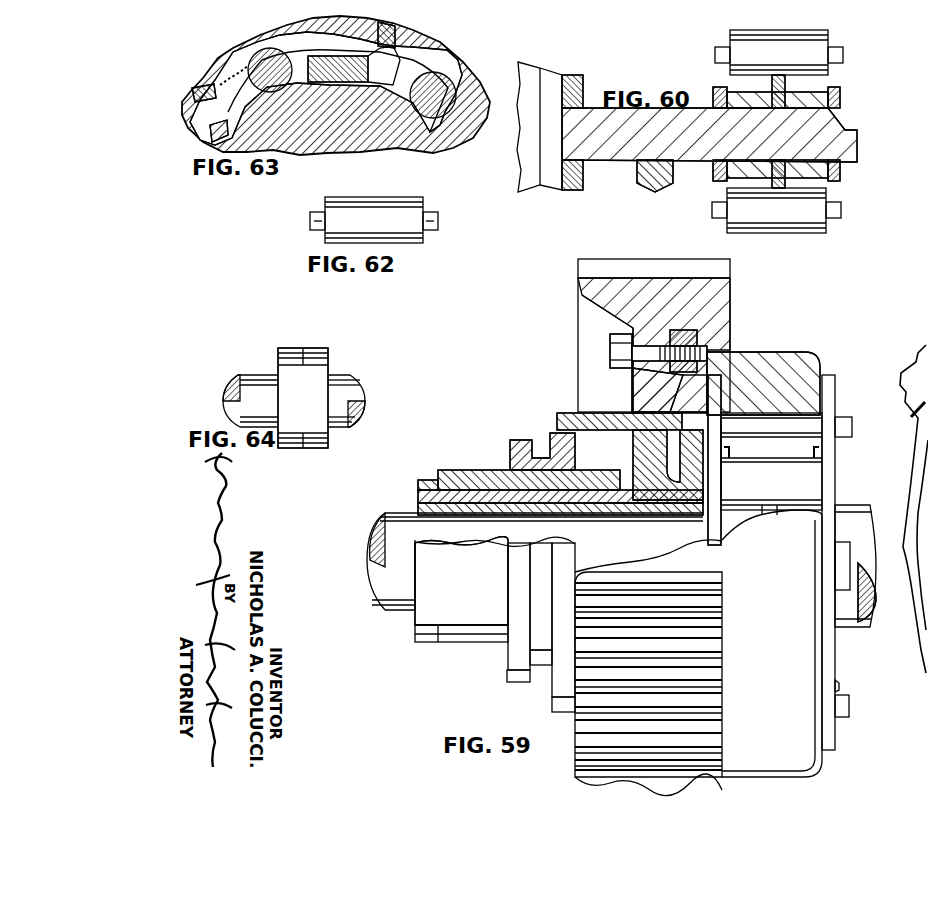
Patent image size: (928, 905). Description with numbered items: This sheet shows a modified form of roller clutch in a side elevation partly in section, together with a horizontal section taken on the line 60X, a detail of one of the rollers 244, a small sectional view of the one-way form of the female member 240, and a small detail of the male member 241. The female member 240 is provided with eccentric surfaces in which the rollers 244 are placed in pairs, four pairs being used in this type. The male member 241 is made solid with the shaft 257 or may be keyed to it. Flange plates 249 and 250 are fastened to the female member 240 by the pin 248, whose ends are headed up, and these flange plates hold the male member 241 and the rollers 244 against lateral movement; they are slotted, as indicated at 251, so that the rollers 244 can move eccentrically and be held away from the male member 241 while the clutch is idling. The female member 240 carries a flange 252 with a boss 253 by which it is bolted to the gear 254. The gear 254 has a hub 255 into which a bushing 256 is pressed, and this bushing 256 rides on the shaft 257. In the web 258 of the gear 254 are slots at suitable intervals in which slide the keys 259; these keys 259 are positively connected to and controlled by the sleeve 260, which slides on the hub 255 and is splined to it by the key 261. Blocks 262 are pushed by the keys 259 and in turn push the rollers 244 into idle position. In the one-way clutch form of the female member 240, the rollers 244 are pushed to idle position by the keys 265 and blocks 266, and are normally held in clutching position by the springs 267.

In FIG. 60, the female member 240 is at (812, 98).
In FIG. 59, the female member 240 is at (808, 360).
In FIG. 63, the male member 241 is at (370, 128).
In FIG. 64, the male member 241 is at (296, 350).
In FIG. 63, the rollers 244 is at (462, 57).
In FIG. 62, the rollers 244 is at (418, 247).
In FIG. 60, the rollers 244 is at (735, 40).
In FIG. 59, the rollers 244 is at (786, 461).
In FIG. 59, the pin 248 is at (840, 688).
In FIG. 60, the flange plate 249 is at (719, 88).
In FIG. 59, the flange plate 249 is at (712, 387).
In FIG. 60, the flange plate 250 is at (840, 100).
In FIG. 59, the flange plate 250 is at (832, 395).
In FIG. 59, the slot 251 is at (927, 682).
In FIG. 59, the flange 252 is at (712, 350).
In FIG. 59, the boss 253 is at (700, 335).
In FIG. 59, the gear 254 is at (603, 268).
In FIG. 59, the hub 255 is at (420, 485).
In FIG. 59, the bushing 256 is at (418, 505).
In FIG. 64, the shaft 257 is at (250, 375).
In FIG. 59, the shaft 257 is at (385, 580).
In FIG. 60, the web 258 is at (655, 185).
In FIG. 59, the web 258 is at (635, 385).
In FIG. 60, the keys 259 is at (848, 145).
In FIG. 59, the keys 259 is at (597, 430).
In FIG. 60, the sleeve 260 is at (571, 180).
In FIG. 59, the sleeve 260 is at (516, 447).
In FIG. 59, the key 261 is at (460, 472).
In FIG. 60, the blocks 262 is at (778, 85).
In FIG. 63, the keys 265 is at (355, 64).
In FIG. 63, the blocks 266 is at (280, 20).
In FIG. 63, the springs 267 is at (233, 80).
In FIG. 59, the section line 60X is at (870, 424).